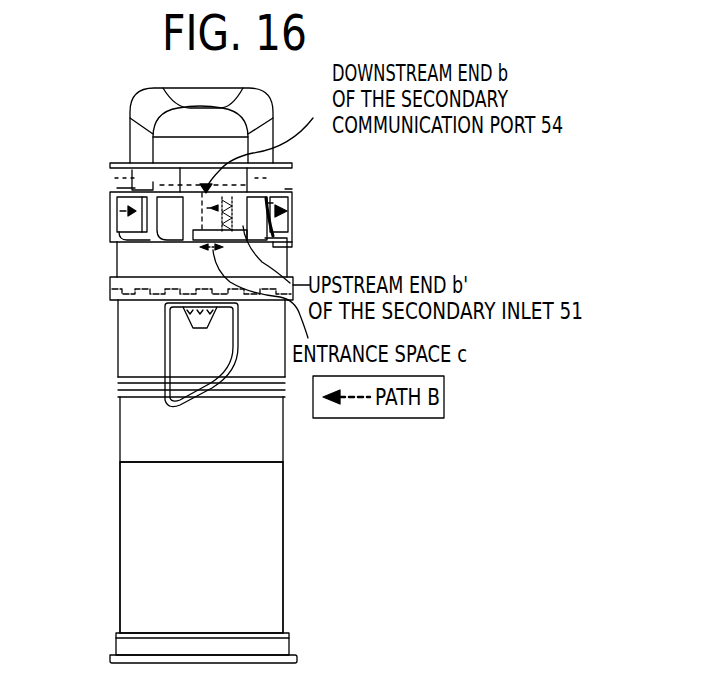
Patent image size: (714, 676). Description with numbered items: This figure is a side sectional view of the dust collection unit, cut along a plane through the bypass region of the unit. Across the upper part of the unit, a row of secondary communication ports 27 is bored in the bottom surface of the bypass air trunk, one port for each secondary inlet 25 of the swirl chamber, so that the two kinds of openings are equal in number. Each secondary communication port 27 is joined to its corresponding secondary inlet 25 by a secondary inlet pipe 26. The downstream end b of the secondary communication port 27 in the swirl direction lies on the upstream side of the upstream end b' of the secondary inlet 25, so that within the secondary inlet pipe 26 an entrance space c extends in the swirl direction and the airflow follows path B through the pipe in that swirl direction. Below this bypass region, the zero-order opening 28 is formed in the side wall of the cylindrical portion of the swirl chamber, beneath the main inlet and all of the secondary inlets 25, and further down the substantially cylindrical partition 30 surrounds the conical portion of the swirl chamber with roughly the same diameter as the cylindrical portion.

The secondary inlet 25 is at (288, 247).
The secondary inlet pipe 26 is at (106, 220).
The secondary communication port 27 is at (203, 188).
The zero-order opening 28 is at (180, 356).
The partition 30 is at (145, 436).